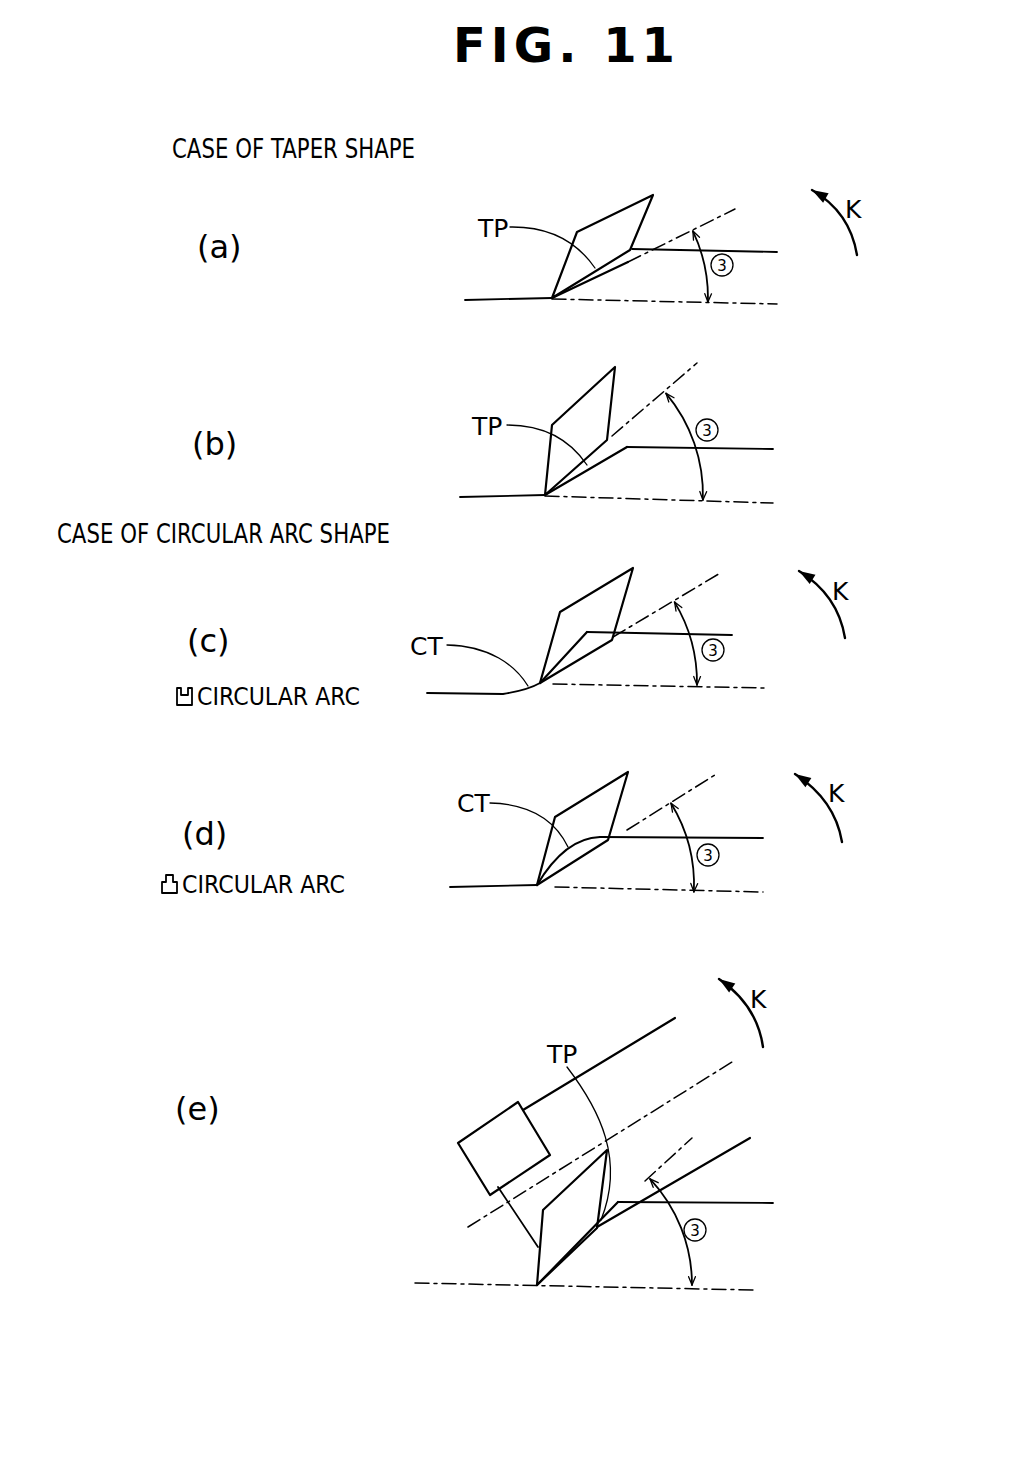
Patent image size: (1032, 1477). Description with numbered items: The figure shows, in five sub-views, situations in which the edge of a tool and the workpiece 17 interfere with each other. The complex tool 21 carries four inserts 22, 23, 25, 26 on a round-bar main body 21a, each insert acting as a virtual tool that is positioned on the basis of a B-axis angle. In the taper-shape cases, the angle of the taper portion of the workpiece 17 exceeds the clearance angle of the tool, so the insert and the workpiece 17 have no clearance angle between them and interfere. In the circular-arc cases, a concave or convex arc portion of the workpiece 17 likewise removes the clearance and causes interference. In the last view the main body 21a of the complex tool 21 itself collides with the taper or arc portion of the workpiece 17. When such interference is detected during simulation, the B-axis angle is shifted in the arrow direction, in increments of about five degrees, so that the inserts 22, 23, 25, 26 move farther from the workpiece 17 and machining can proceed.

The workpiece 17 is at (502, 313).
The complex tool 21 is at (643, 1038).
The main body 21a is at (726, 1150).
The insert 22 is at (703, 751).
The insert 23 is at (703, 751).
The insert 25 is at (703, 751).
The insert 26 is at (632, 210).